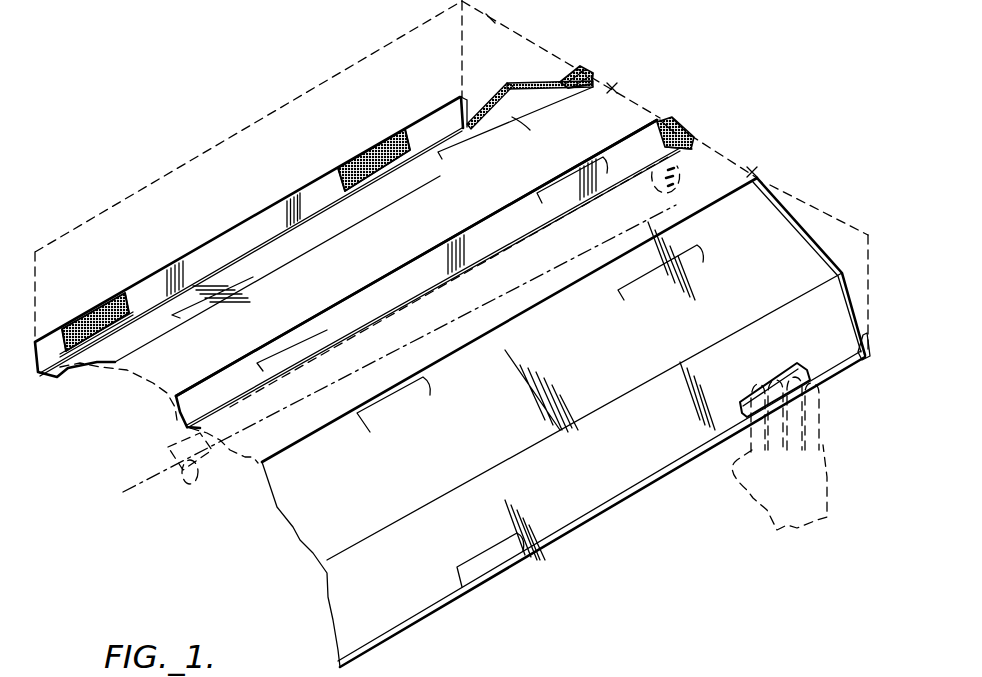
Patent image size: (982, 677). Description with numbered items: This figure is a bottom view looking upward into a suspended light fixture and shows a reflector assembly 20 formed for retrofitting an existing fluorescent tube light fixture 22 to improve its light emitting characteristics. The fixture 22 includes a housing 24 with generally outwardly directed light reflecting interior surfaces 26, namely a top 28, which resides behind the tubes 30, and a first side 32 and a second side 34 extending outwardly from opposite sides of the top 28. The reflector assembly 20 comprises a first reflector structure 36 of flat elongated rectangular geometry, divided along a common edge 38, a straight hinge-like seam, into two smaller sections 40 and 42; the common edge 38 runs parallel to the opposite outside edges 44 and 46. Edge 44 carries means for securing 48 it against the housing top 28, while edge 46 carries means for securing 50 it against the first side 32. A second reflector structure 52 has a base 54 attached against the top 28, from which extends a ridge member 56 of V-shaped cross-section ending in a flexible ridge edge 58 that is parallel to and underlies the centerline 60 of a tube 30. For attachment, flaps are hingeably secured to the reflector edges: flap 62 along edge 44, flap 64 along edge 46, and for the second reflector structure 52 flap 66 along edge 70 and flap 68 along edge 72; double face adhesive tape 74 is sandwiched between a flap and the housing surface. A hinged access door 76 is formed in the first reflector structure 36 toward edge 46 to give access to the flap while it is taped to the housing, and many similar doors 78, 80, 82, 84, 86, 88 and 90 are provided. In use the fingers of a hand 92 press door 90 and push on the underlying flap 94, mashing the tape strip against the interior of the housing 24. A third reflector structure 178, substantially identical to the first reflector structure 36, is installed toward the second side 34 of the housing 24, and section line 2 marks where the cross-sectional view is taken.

The section line 2- 2 is at (290, 90).
The reflector assembly 20 is at (147, 522).
The fluorescent tube light fixture 22 is at (783, 84).
The housing 24 is at (377, 50).
The light reflecting interior surfaces 26 is at (497, 17).
The top 28 is at (837, 220).
The tubes 30 is at (215, 477).
The first side 32 is at (460, 51).
The second side 34 is at (870, 278).
The first reflector structure 36 is at (348, 237).
The common edge 38 is at (511, 82).
The smaller section 40 is at (462, 100).
The smaller section 42 is at (509, 115).
The outside edge 44 is at (57, 375).
The outside edge 46 is at (147, 345).
The means for securing 48 is at (103, 287).
The means for securing 50 is at (586, 60).
The second reflector structure 52 is at (380, 268).
The base 54 is at (692, 142).
The ridge member 56 is at (686, 113).
The ridge edge 58 is at (528, 226).
The centerline 60 is at (140, 483).
The flap 62 is at (207, 264).
The flap 64 is at (575, 75).
The flap 66 is at (678, 117).
The flap 68 is at (682, 128).
The edge 70 is at (642, 129).
The edge 72 is at (690, 150).
The tape 74 is at (88, 312).
The hinged access door 76 is at (207, 303).
The door 78 is at (530, 130).
The door 80 is at (323, 327).
The door 82 is at (565, 178).
The door 84 is at (412, 398).
The door 86 is at (695, 248).
The door 88 is at (502, 545).
The door 90 is at (798, 380).
The hand 92 is at (757, 497).
The underlying flap 94 is at (862, 341).
The third reflector structure 178 is at (860, 297).